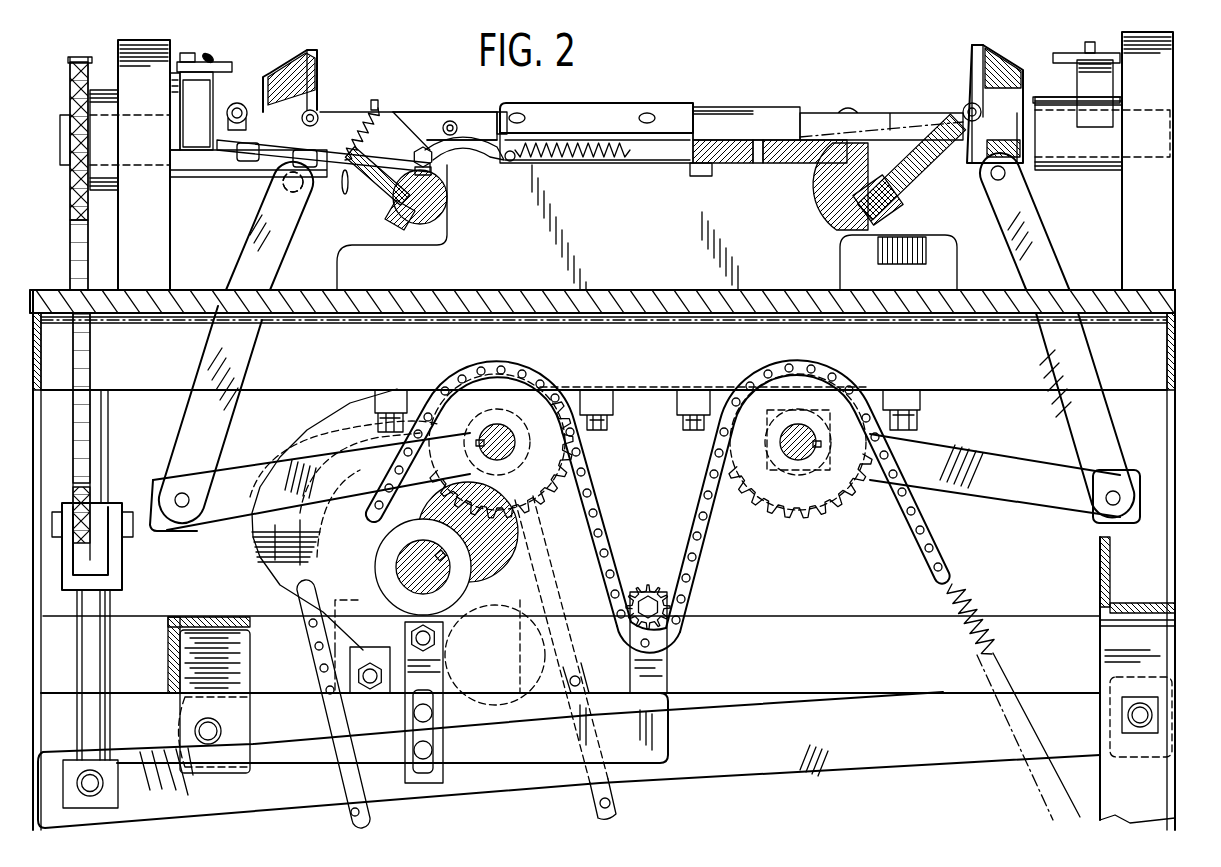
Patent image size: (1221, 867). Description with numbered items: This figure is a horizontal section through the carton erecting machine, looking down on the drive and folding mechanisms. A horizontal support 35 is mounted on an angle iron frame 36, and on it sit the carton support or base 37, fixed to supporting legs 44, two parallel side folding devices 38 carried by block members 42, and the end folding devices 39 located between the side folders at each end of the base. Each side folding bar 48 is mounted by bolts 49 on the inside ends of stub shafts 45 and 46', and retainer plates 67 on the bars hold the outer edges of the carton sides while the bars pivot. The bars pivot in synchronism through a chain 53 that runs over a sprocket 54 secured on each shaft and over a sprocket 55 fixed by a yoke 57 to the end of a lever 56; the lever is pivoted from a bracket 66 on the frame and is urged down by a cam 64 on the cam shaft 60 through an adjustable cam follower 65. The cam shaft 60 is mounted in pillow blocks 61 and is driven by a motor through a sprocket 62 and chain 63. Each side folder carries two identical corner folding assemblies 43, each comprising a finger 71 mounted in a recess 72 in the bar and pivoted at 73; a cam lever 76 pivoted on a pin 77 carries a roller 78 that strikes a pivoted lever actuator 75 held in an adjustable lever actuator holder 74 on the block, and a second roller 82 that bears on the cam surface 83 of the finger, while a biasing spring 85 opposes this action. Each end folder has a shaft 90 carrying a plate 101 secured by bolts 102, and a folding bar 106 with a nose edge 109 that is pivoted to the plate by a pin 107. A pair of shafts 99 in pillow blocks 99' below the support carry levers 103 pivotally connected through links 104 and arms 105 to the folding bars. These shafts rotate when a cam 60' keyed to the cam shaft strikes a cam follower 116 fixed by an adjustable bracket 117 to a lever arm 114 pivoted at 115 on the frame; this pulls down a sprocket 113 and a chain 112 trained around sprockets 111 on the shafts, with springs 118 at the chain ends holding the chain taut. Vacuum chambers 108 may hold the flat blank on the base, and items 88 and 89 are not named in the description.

The horizontal support 35 is at (645, 296).
The angle iron frame 36 is at (108, 443).
The carton support or base 37 is at (697, 176).
The side folding device 38 is at (667, 98).
The end folding device 39 is at (327, 55).
The block member 42 is at (160, 238).
The corner folding assembly 43 is at (400, 100).
The supporting leg 44 is at (613, 250).
The stub shaft 45 is at (60, 130).
The hub 46' is at (1102, 141).
The side folding bar 48 is at (770, 115).
The bolt 49 is at (246, 163).
The chain 53 is at (77, 230).
The sprocket 54 is at (105, 173).
The sprocket 55 is at (102, 530).
The lever 56 is at (264, 797).
The yoke 57 is at (117, 572).
The cam shaft 60 is at (405, 567).
The cam 60' is at (469, 532).
The pillow block 61 is at (377, 573).
The sprocket 62 is at (337, 628).
The chain 63 is at (613, 806).
The cam 64 is at (262, 548).
The adjustable cam follower 65 is at (355, 648).
The bracket 66 is at (1113, 740).
The retainer plate 67 is at (587, 106).
The finger 71 is at (463, 125).
The recess 72 is at (498, 112).
The pivot 73 is at (450, 121).
The adjustable lever actuator holder 74 is at (190, 150).
The pivoted lever actuator 75 is at (230, 64).
The cam lever 76 is at (400, 149).
The pin 77 is at (318, 115).
The roller 78 is at (233, 112).
The second roller 82 is at (440, 180).
The cam surface 83 is at (487, 165).
The biasing spring 85 is at (210, 56).
The cap plate 88 is at (1077, 75).
The bolt 89 is at (234, 105).
The shaft 90 is at (447, 202).
The shaft 99 is at (647, 442).
The pillow block 99' is at (647, 411).
The plate 101 is at (390, 185).
The bolt 102 is at (400, 228).
The lever 103 is at (248, 462).
The link 104 is at (243, 343).
The arm 105 is at (300, 80).
The folding bar 106 is at (313, 90).
The pin 107 is at (963, 107).
The vacuum chamber 108 is at (760, 108).
The nose edge 109 is at (971, 45).
The sprocket 111 is at (548, 460).
The chain 112 is at (700, 553).
The sprocket 113 is at (657, 578).
The lever arm 114 is at (663, 735).
The pivot 115 is at (197, 730).
The cam follower 116 is at (440, 626).
The adjustable bracket 117 is at (443, 735).
The spring 118 is at (975, 600).